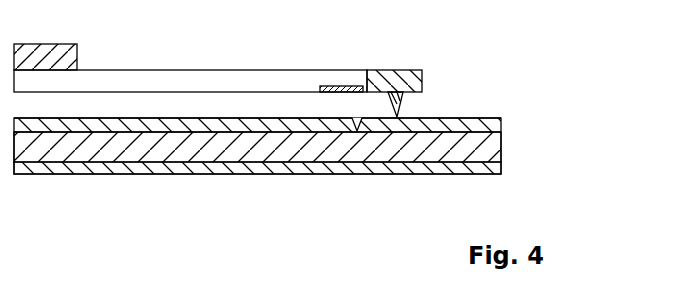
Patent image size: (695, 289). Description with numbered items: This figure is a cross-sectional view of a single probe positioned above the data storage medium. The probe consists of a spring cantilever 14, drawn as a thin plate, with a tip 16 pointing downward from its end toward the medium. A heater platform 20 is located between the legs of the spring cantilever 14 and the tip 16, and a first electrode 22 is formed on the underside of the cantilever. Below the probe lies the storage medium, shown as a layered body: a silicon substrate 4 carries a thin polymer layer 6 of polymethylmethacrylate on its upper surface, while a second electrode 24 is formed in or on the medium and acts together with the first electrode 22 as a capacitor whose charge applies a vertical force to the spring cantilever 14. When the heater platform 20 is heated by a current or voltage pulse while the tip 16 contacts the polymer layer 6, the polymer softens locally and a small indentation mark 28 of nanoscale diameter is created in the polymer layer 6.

The substrate 4 is at (502, 147).
The polymer layer 6 is at (502, 123).
The spring cantilever 14 is at (203, 70).
The tip 16 is at (400, 108).
The heater platform 20 is at (397, 70).
The first electrode 22 is at (330, 86).
The second electrode 24 is at (118, 168).
The indentation mark 28 is at (357, 132).